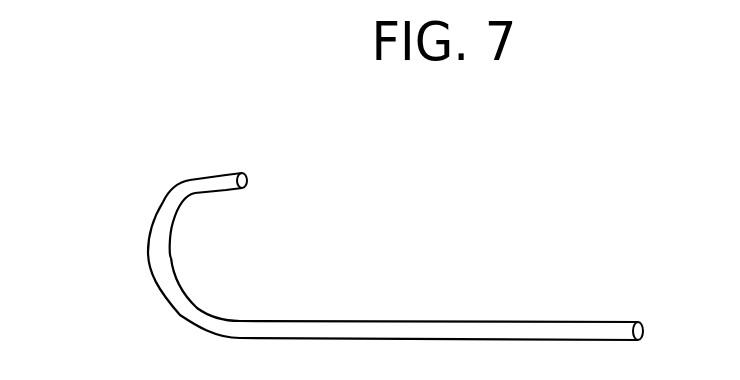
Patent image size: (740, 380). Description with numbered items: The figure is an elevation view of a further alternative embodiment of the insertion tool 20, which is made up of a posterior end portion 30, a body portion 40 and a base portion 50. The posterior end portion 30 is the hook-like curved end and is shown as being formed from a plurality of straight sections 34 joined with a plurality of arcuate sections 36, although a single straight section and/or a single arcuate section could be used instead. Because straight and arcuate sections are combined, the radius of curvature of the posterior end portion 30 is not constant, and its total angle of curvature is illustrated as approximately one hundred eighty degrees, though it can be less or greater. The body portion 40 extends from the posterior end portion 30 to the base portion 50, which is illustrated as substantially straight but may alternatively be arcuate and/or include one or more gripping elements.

The insertion tool 20 is at (389, 262).
The posterior end portion 30 is at (140, 262).
The straight sections 34 is at (230, 182).
The arcuate sections 36 is at (183, 192).
The body portion 40 is at (475, 312).
The base portion 50 is at (605, 312).